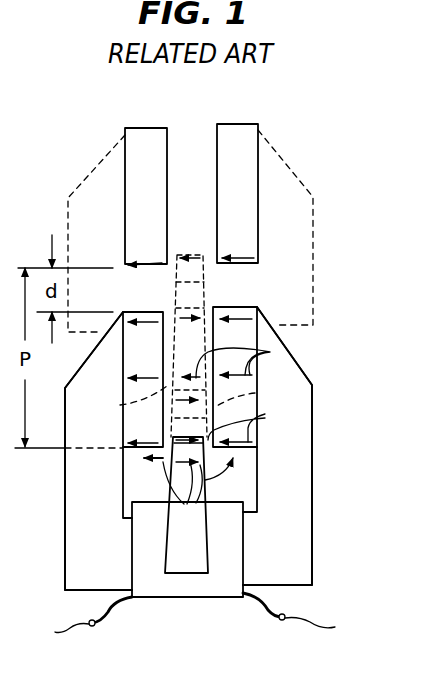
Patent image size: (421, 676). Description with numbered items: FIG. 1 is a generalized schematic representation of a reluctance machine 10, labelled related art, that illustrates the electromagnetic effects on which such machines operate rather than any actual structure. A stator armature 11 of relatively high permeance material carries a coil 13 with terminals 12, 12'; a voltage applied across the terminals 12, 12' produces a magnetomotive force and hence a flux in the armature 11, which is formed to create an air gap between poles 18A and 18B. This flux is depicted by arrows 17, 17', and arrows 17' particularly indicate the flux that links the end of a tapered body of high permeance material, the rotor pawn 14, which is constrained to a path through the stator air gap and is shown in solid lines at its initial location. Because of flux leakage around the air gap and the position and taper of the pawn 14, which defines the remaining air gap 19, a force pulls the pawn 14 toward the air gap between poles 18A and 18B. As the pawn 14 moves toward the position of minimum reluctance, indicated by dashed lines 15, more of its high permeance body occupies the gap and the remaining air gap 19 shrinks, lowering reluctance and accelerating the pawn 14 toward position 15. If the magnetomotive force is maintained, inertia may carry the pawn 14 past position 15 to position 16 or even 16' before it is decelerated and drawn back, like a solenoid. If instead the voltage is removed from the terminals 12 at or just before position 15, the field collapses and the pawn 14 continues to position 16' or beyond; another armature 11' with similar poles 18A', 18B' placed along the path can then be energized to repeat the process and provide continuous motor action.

The reluctance machine 10 is at (340, 219).
The stator armature 11 is at (221, 448).
The another armature 11' is at (226, 231).
The terminal 12 is at (304, 618).
The terminal 12' is at (77, 621).
The coil 13 is at (215, 587).
The rotor pawn 14 is at (200, 543).
The minimum reluctance position 15 is at (150, 478).
The position 16 is at (256, 388).
The position 16' is at (122, 403).
The flux arrows 17 is at (275, 360).
The flux arrows 17' is at (253, 425).
The pole 18A is at (259, 396).
The pole 18B is at (124, 399).
The pole 18A' is at (267, 170).
The pole 18B' is at (127, 172).
The remaining air gap 19 is at (248, 455).